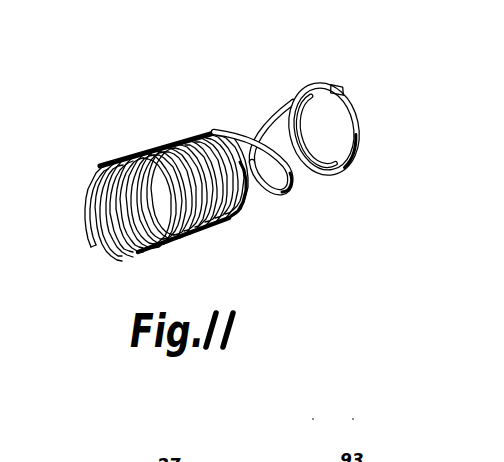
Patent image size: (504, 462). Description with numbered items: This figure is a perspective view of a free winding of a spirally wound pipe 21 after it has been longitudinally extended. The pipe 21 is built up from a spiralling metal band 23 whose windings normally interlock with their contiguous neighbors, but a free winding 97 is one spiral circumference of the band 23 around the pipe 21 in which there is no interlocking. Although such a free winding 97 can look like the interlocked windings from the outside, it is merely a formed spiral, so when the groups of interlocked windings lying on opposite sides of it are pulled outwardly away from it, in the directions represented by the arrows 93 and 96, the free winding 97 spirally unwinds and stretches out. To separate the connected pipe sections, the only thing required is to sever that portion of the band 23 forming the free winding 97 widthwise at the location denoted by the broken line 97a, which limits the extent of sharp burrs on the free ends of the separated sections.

The pipe 21 is at (203, 237).
The spiralling metal band 23 is at (147, 147).
The arrow 93 is at (32, 243).
The arrow 96 is at (372, 102).
The free winding 97 is at (224, 125).
The broken line 97a is at (247, 120).